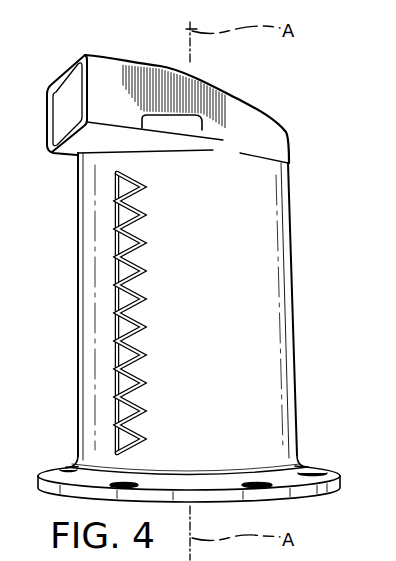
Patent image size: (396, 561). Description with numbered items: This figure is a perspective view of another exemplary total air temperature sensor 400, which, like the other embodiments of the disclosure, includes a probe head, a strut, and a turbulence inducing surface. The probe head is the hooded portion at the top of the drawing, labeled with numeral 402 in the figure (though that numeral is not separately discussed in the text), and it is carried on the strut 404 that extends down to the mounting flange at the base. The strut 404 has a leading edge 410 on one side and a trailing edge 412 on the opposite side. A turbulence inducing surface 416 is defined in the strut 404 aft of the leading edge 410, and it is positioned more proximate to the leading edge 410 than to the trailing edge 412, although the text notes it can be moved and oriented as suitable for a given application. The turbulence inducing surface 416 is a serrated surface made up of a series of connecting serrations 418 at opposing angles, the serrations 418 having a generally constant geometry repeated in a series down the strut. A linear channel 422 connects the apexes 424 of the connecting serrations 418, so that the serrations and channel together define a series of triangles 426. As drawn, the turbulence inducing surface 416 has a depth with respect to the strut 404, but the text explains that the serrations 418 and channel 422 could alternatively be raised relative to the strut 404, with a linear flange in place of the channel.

The total air temperature sensor 400 is at (305, 118).
The hood 402 is at (155, 72).
The strut 404 is at (253, 348).
The leading edge 410 is at (80, 295).
The trailing edge 412 is at (290, 306).
The turbulence inducing surface 416 is at (150, 281).
The connecting serrations 418 is at (140, 362).
The linear channel 422 is at (117, 385).
The apexes 424 is at (118, 343).
The triangles 426 is at (130, 212).